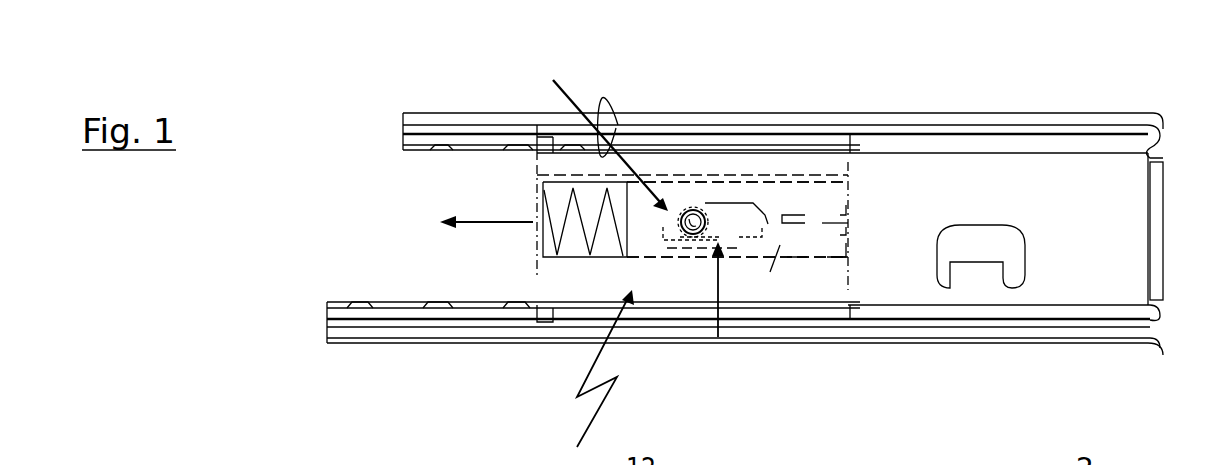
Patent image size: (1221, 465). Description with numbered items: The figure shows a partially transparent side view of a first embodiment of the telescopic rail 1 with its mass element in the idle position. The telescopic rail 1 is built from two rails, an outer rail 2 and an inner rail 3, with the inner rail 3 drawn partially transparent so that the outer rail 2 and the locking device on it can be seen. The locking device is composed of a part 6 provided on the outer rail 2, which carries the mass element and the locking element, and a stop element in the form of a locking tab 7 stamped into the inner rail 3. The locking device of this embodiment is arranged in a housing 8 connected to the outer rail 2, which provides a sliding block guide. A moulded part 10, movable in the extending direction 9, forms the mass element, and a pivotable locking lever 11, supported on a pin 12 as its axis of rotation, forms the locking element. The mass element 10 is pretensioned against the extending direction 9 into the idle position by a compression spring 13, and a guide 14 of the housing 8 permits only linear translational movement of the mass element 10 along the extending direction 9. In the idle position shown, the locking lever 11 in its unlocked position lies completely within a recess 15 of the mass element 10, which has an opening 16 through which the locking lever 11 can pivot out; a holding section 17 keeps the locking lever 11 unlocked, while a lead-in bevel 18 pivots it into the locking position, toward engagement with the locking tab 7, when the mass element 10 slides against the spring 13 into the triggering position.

The telescopic rail 1 is at (1007, 89).
The outer rail 2 is at (888, 125).
The inner rail 3 is at (887, 305).
The part provided on the outer rail 6 is at (598, 377).
The locking tab 7 is at (983, 270).
The housing 8 is at (598, 268).
The extending direction 9 is at (492, 222).
The mass element 10 is at (787, 193).
The locking lever 11 is at (740, 232).
The pin 12 is at (691, 219).
The compression spring 13 is at (581, 245).
The guide 14 is at (832, 225).
The recess 15 is at (602, 129).
The opening 16 is at (718, 337).
The holding section 17 is at (687, 250).
The lead-in bevel 18 is at (780, 243).